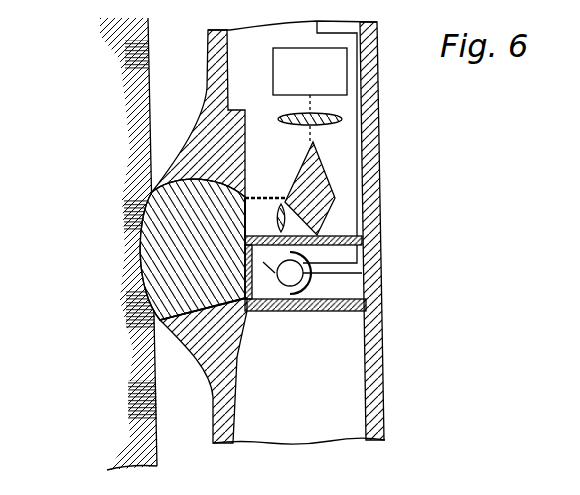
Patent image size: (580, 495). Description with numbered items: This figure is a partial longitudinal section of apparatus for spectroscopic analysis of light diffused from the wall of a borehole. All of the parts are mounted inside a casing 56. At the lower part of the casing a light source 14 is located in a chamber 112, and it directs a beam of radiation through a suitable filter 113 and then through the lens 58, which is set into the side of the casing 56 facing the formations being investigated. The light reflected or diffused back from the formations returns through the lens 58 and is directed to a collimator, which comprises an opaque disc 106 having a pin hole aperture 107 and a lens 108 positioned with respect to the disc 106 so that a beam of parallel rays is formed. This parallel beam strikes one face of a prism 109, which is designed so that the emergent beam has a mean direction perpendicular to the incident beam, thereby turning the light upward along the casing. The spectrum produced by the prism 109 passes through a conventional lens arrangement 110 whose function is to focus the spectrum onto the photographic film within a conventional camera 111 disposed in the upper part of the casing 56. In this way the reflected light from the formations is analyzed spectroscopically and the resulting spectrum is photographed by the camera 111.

The light source 14 is at (288, 283).
The casing 56 is at (185, 168).
The lens 58 is at (173, 281).
The opaque disc 106 is at (278, 216).
The pin hole aperture 107 is at (283, 226).
The lens 108 is at (295, 228).
The prism 109 is at (330, 170).
The lens arrangement 110 is at (332, 125).
The camera 111 is at (340, 80).
The chamber 112 is at (327, 300).
The filter 113 is at (195, 322).